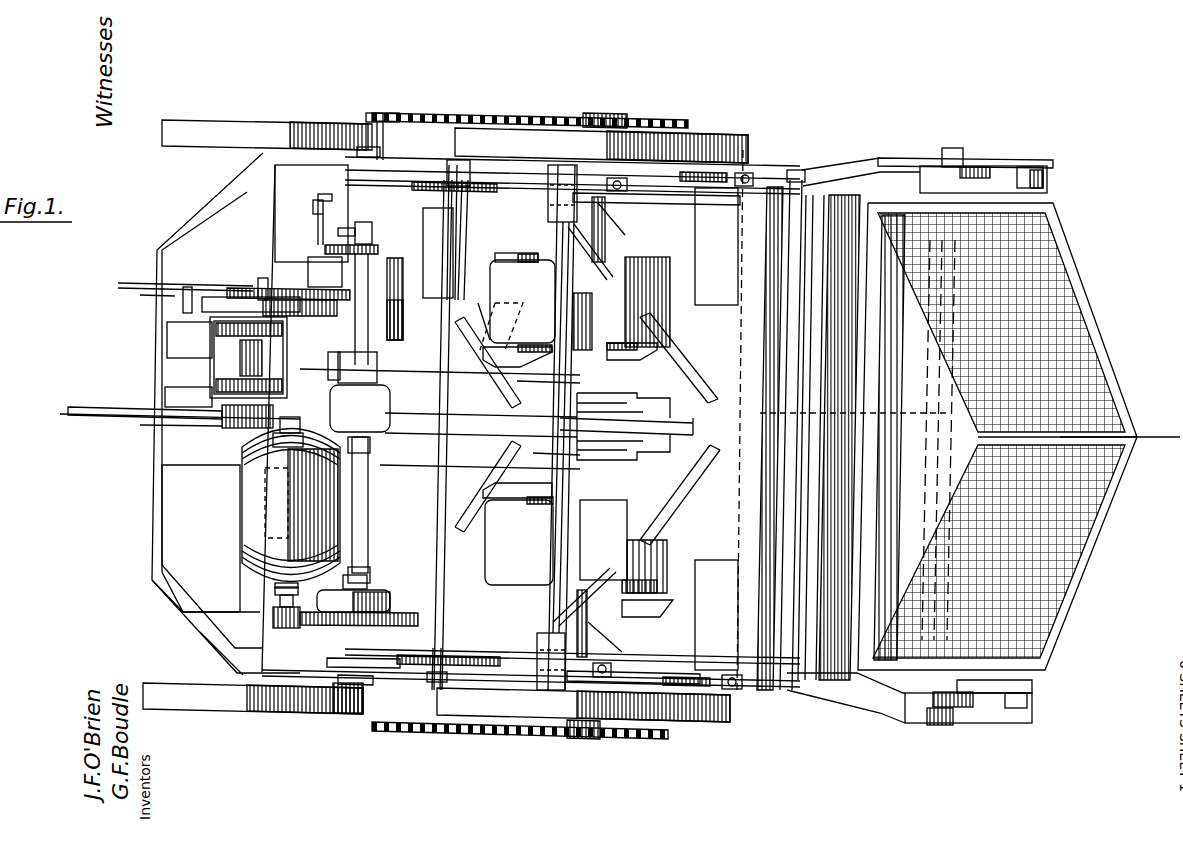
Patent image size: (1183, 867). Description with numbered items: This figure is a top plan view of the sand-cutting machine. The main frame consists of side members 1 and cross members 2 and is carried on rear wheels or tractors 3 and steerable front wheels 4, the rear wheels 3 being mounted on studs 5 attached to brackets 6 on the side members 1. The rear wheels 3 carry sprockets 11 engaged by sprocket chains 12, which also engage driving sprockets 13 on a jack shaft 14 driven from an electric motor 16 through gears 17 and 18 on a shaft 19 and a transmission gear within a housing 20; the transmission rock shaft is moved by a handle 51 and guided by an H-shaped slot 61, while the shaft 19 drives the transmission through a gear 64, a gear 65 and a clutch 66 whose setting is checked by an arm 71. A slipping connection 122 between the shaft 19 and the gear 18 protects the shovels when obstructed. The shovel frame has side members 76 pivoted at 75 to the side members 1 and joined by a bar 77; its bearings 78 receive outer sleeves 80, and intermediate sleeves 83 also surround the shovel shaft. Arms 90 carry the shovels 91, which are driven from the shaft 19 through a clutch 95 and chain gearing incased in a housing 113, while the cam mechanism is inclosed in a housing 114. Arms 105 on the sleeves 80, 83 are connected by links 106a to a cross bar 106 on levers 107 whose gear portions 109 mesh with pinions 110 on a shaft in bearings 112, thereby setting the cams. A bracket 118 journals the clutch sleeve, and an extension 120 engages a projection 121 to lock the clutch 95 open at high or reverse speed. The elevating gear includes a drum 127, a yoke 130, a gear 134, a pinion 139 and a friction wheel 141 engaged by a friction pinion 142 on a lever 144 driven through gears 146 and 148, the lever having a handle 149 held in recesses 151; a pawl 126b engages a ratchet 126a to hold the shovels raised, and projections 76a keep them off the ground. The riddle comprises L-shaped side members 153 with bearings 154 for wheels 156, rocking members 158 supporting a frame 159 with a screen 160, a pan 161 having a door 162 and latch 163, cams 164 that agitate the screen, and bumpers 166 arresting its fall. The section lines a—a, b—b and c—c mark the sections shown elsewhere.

The side members 1 is at (282, 163).
The cross members 2 is at (152, 515).
The rear wheels or tractors 3 is at (490, 140).
The front wheels 4 is at (190, 126).
The studs 5 is at (592, 680).
The brackets 6 is at (612, 160).
The sprockets 11 is at (683, 120).
The sprocket chains 12 is at (430, 113).
The driving sprockets 13 is at (372, 113).
The jack shaft 14 is at (393, 113).
The electric motor 16 is at (258, 506).
The gear 17 is at (272, 614).
The gear 18 is at (380, 590).
The shaft 19 is at (370, 498).
The transmission gear housing 20 is at (403, 320).
The handle 51 is at (327, 195).
The H-shaped slot 61 is at (314, 206).
The gear 64 is at (427, 232).
The gear 65 is at (327, 250).
The clutch 66 is at (360, 222).
The arm 71 is at (318, 228).
The pivot 75 is at (338, 712).
The side members 76 is at (528, 185).
The projections 76a is at (752, 172).
The bar 77 is at (762, 297).
The bearings 78 is at (588, 684).
The outer sleeves 80 is at (603, 250).
The intermediate sleeves 83 is at (577, 320).
The arms 90 is at (678, 252).
The shovels 91 is at (716, 429).
The clutch 95 is at (362, 370).
The arms 105 is at (635, 612).
The cross bar 106 is at (548, 600).
The links 106a is at (657, 787).
The levers 107 is at (551, 165).
The gear portions 109 is at (546, 190).
The pinions 110 is at (420, 184).
The bearings 112 is at (467, 157).
The housing 113 is at (407, 420).
The housing 114 is at (517, 419).
The bracket 118 is at (330, 316).
The extension 120 is at (360, 407).
The projection 121 is at (317, 370).
The slipping connection 122 is at (236, 568).
The ratchet 126a is at (219, 376).
The pawl 126b is at (222, 340).
The drum 127 is at (222, 423).
The yoke 130 is at (547, 690).
The gear 134 is at (213, 384).
The pinion 139 is at (252, 297).
The friction wheel 141 is at (210, 313).
The friction pinion 142 is at (368, 300).
The lever 144 is at (273, 286).
The gear 146 is at (355, 298).
The gear 148 is at (202, 303).
The handle 149 is at (128, 282).
The recesses 151 is at (187, 286).
The L shaped side members 153 is at (876, 160).
The bearings 154 is at (955, 150).
The wheels 156 is at (988, 167).
The rocking members 158 is at (845, 184).
The frame 159 is at (1078, 272).
The screen 160 is at (1033, 363).
The pan 161 is at (842, 540).
The door 162 is at (827, 363).
The latch 163 is at (813, 500).
The cams 164 is at (920, 180).
The bumpers 166 is at (1046, 178).
The section line a— a is at (605, 416).
The section line b— b is at (566, 375).
The section line c— c is at (542, 547).